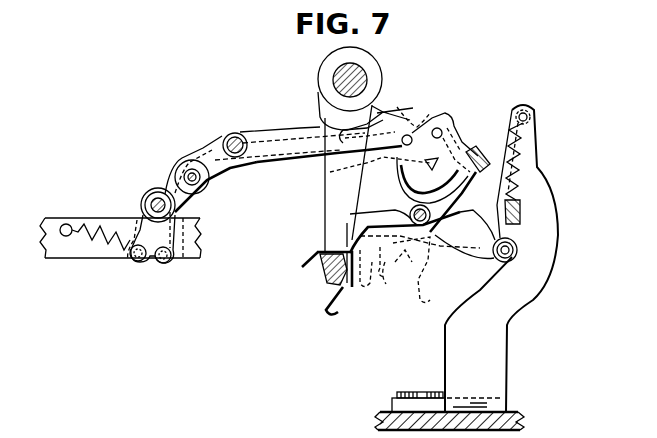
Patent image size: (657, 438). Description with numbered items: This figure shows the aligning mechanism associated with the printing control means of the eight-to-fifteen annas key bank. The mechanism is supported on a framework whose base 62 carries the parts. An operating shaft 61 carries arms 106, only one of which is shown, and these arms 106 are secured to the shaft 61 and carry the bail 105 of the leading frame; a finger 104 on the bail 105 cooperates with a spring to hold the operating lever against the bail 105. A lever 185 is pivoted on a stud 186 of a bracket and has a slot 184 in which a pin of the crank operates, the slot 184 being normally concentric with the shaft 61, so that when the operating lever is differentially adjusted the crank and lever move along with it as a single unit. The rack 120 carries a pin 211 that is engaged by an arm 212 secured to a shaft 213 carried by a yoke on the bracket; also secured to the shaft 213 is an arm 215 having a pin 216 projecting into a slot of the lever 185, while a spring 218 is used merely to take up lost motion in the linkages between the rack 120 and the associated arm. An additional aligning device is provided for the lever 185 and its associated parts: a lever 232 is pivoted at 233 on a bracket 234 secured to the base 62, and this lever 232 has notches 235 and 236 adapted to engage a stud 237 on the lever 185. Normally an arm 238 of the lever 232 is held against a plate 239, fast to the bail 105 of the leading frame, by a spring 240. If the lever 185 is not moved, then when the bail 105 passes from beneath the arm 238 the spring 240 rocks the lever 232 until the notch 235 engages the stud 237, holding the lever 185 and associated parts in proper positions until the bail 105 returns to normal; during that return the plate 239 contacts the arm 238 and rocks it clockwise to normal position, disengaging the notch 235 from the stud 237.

The operating shaft 61 is at (354, 66).
The base 62 is at (380, 418).
The finger 104 is at (324, 311).
The bail 105 is at (322, 277).
The arms 106 is at (325, 189).
The rack 120 is at (100, 222).
The slot 184 is at (386, 118).
The lever 185 is at (290, 130).
The stud 186 is at (234, 133).
The pin 211 is at (164, 264).
The arm 212 is at (147, 233).
The shaft 213 is at (142, 201).
The arm 215 is at (175, 187).
The pin 216 is at (197, 184).
The spring 218 is at (112, 252).
The lever 232 is at (440, 220).
The pivot 233 is at (432, 240).
The bracket 234 is at (557, 231).
The notch 235 is at (437, 127).
The notch 236 is at (443, 187).
The stud 237 is at (408, 134).
The arm 238 is at (345, 235).
The plate 239 is at (398, 279).
The spring 240 is at (532, 148).